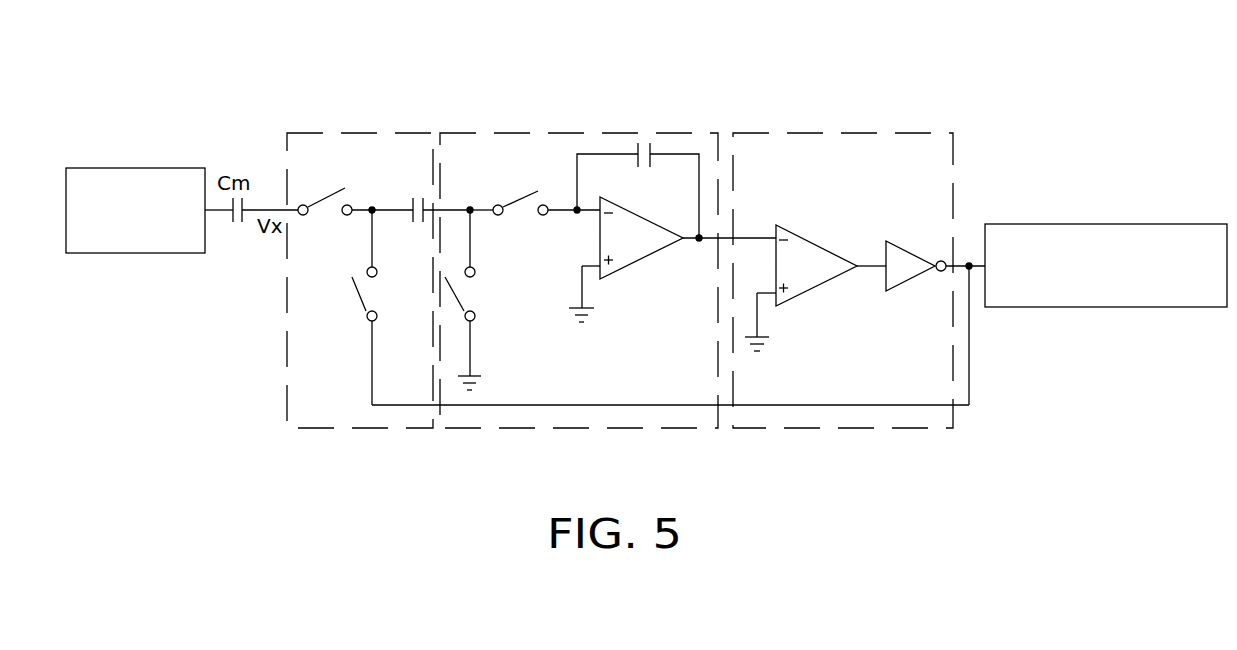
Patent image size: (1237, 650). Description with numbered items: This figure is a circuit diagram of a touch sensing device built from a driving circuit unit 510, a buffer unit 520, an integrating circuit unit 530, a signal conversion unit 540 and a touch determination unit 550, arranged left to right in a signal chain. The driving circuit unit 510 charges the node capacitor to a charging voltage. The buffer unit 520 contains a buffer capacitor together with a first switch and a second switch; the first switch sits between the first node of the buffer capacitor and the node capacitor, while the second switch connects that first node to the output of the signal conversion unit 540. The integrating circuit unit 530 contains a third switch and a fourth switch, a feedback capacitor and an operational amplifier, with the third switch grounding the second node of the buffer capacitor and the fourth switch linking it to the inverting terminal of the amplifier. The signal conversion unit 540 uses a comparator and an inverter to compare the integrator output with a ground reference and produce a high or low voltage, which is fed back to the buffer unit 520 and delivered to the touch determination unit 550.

The driving circuit unit 510 is at (133, 168).
The buffer unit 520 is at (358, 132).
The integrating circuit unit 530 is at (577, 132).
The signal conversion unit 540 is at (843, 132).
The touch determination unit 550 is at (1053, 223).